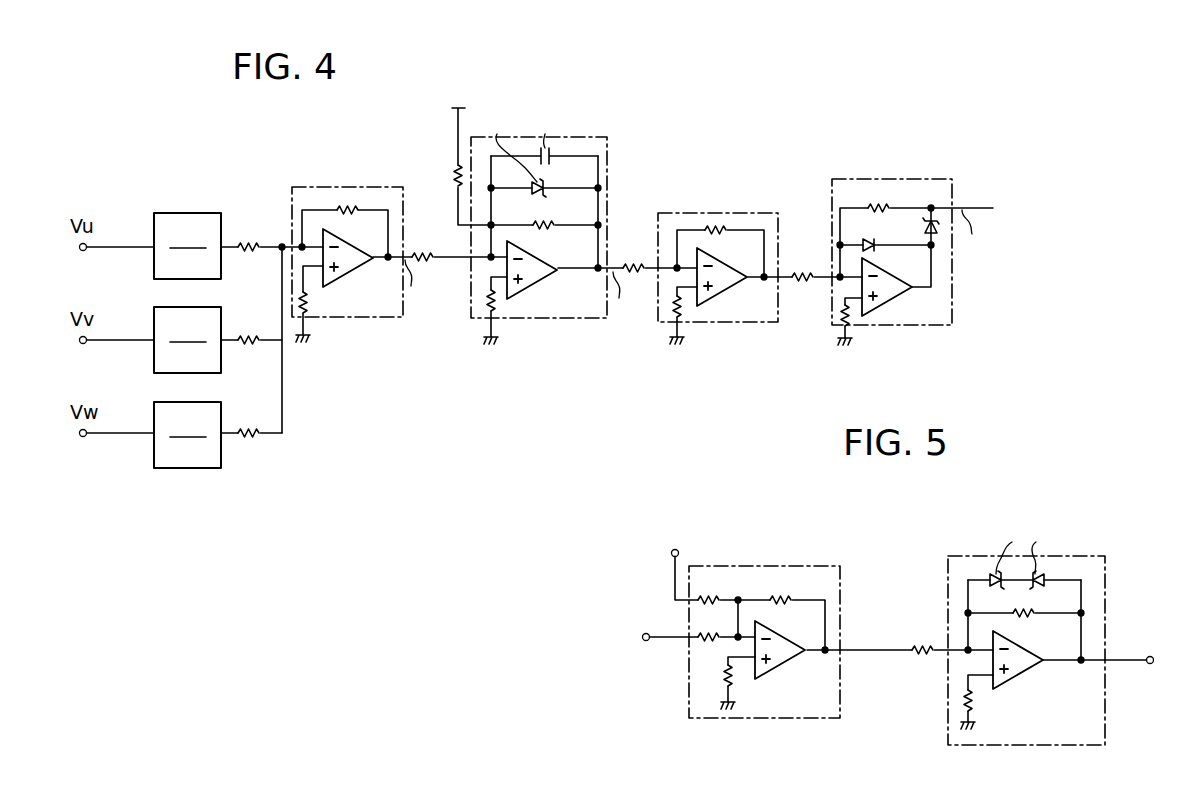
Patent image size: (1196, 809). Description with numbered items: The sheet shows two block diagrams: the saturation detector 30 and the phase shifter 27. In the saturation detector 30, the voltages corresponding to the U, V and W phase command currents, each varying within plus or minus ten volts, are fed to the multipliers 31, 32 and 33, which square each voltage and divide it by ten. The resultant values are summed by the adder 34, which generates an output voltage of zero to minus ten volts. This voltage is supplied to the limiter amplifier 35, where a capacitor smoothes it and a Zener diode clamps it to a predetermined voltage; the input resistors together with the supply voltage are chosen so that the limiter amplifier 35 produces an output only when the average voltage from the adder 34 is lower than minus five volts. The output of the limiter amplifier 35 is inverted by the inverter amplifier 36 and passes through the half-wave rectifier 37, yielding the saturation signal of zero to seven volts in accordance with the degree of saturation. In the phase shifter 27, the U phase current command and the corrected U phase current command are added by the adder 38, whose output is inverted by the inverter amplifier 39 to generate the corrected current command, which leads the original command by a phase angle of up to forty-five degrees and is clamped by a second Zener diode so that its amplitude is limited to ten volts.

In FIG. 5, the phase shifter 27 is at (818, 740).
In FIG. 4, the saturation detector 30 is at (758, 145).
In FIG. 4, the multiplier 31 is at (208, 212).
In FIG. 4, the multiplier 32 is at (208, 306).
In FIG. 4, the multiplier 33 is at (208, 401).
In FIG. 4, the adder 34 is at (344, 187).
In FIG. 4, the limiter amplifier 35 is at (577, 136).
In FIG. 4, the inverter amplifier 36 is at (726, 214).
In FIG. 4, the half-wave rectifier 37 is at (905, 178).
In FIG. 5, the adder 38 is at (775, 566).
In FIG. 5, the inverter amplifier 39 is at (1078, 556).